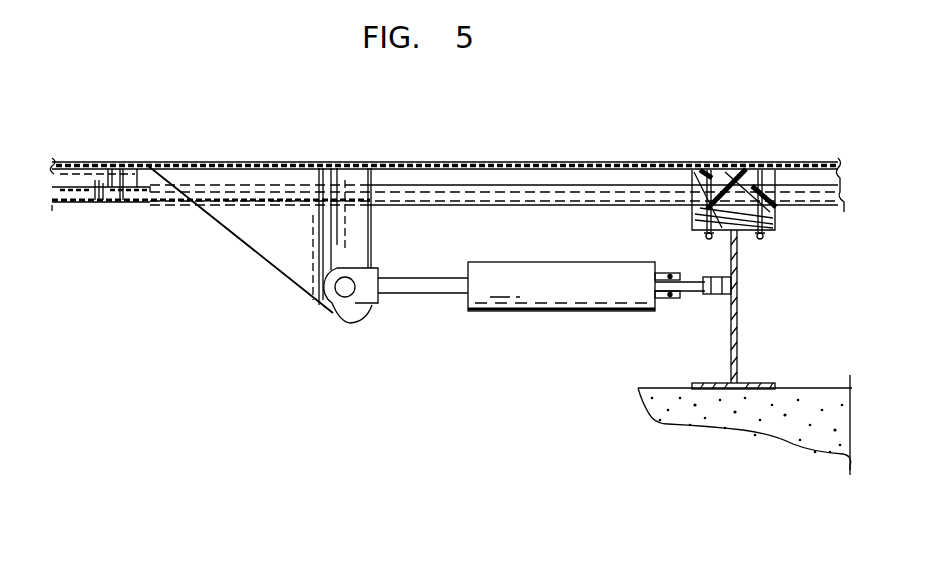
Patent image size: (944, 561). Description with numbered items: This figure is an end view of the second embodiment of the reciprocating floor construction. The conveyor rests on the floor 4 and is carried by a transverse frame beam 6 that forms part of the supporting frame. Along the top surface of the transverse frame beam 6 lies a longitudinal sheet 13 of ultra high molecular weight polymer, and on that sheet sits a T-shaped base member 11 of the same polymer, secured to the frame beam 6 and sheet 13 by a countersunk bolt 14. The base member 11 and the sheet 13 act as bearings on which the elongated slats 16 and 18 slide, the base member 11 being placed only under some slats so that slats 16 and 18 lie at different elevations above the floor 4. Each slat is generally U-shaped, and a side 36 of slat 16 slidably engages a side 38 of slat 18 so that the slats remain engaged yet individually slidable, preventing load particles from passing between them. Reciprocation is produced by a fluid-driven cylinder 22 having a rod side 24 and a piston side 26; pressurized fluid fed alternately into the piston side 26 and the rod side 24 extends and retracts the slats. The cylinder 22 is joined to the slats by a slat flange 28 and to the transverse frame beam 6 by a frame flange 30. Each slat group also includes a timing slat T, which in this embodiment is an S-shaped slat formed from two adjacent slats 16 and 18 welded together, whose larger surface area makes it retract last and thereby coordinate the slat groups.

The floor 4 is at (820, 395).
The transverse frame beam 6 is at (738, 315).
The base member 11 is at (719, 170).
The longitudinal sheet 13 is at (468, 200).
The countersunk bolt 14 is at (687, 167).
The slat 16 is at (155, 207).
The slat 18 is at (541, 163).
The fluid-driven cylinder 22 is at (562, 310).
The rod side 24 is at (467, 312).
The piston side 26 is at (637, 305).
The slat flange 28 is at (288, 260).
The frame flange 30 is at (698, 288).
The side 36 is at (92, 207).
The side 38 is at (73, 172).
The timing slat T is at (117, 200).